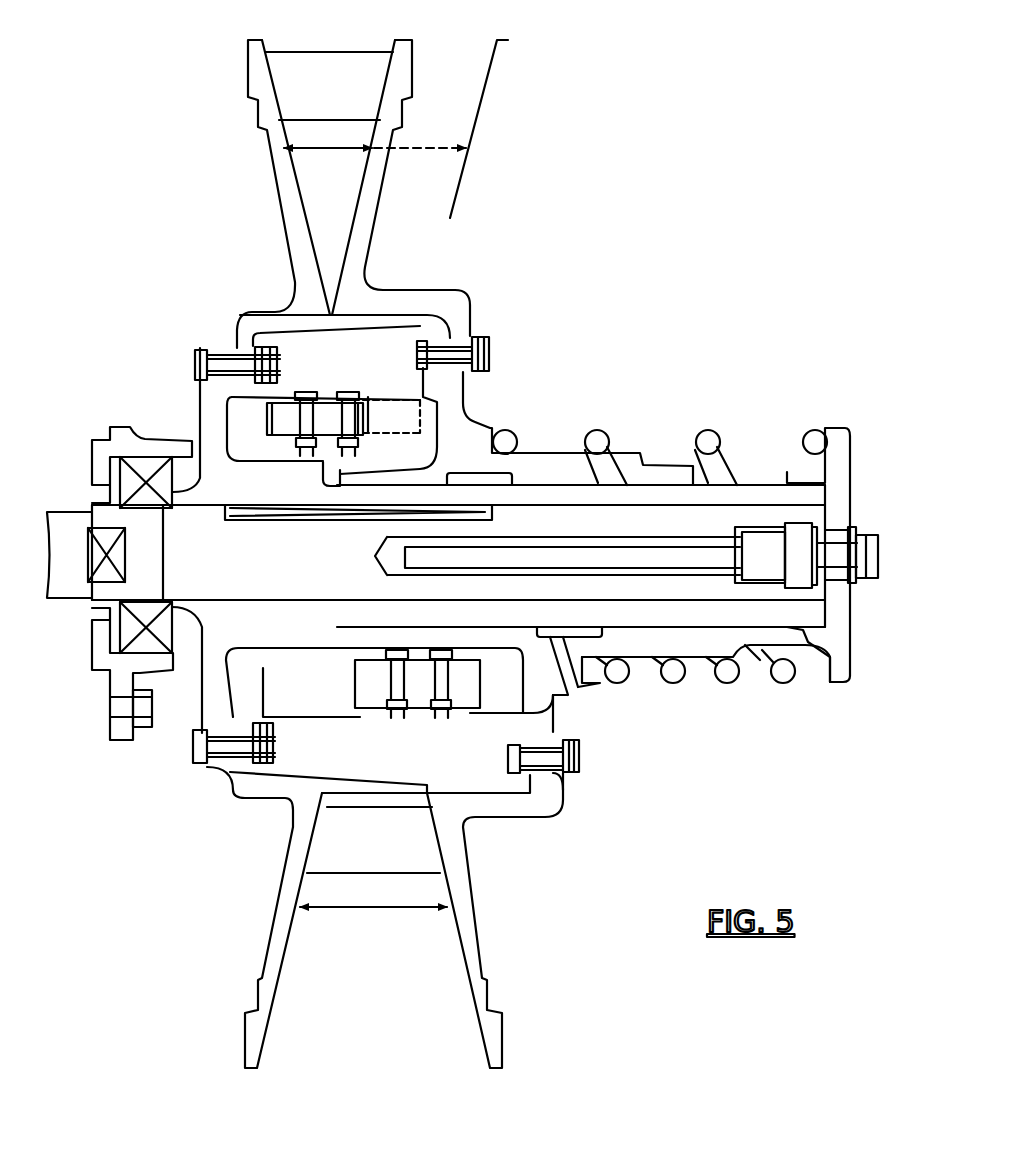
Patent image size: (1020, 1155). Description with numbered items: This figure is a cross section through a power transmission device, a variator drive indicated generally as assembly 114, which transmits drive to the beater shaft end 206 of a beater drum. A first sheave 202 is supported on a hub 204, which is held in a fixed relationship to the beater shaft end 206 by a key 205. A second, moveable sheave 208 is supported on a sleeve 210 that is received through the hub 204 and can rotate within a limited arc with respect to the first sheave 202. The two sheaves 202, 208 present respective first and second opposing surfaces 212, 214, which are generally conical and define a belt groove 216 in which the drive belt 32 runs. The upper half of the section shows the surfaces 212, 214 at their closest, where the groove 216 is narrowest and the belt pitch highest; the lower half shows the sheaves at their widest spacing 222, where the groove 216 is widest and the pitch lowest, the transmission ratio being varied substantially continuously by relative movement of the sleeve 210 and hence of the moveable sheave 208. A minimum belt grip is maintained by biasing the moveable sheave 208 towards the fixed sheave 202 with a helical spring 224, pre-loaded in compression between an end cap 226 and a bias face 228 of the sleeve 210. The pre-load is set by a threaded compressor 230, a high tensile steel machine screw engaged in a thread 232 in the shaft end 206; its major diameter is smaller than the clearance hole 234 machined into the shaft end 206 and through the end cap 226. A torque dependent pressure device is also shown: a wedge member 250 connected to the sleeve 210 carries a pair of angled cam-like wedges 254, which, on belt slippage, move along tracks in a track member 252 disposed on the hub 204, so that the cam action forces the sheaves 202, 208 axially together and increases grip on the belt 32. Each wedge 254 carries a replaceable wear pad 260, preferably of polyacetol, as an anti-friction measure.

The drive belt 32 is at (362, 62).
The pulley assembly 114 is at (714, 210).
The first sheave 202 is at (375, 554).
The hub 204 is at (213, 425).
The key 205 is at (256, 520).
The beater shaft end 206 is at (68, 580).
The second moveable sheave 208 is at (400, 298).
The sleeve 210 is at (462, 425).
The first opposing surface 212 is at (290, 212).
The second opposing surface 214 is at (358, 226).
The belt groove 216 is at (375, 542).
The widest groove width 222 is at (532, 912).
The helical spring 224 is at (810, 430).
The end cap 226 is at (847, 487).
The bias face 228 is at (580, 660).
The threaded compressor 230 is at (690, 555).
The thread 232 is at (748, 520).
The clearance hole 234 is at (575, 537).
The wedge member 250 is at (420, 410).
The track member 252 is at (243, 408).
The angled cam-like wedges 254 is at (385, 420).
The wear pad 260 is at (320, 425).